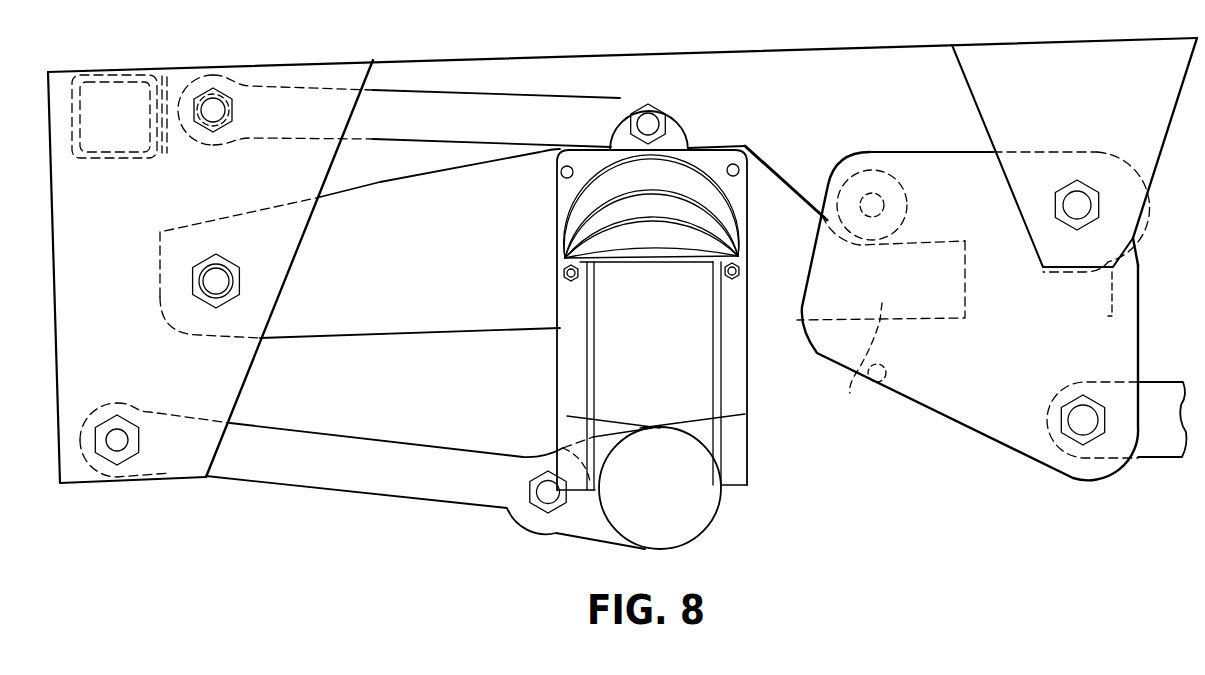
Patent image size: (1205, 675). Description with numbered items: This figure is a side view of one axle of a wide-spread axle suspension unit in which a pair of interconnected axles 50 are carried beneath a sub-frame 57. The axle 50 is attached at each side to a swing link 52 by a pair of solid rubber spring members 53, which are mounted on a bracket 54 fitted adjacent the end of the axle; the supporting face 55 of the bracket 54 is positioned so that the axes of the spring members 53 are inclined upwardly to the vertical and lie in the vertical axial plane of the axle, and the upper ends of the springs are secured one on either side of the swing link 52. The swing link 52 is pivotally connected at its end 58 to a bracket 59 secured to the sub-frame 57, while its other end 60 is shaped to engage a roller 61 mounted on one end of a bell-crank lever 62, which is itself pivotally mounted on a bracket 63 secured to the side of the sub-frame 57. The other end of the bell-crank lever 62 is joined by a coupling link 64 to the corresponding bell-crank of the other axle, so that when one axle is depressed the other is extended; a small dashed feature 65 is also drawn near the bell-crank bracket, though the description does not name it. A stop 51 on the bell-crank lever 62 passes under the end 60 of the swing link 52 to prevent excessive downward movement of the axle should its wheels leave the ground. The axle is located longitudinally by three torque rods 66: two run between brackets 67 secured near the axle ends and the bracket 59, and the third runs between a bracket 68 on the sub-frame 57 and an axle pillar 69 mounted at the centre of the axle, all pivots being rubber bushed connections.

The axle 50 is at (707, 508).
The stop 51 is at (880, 382).
The swing link 52 is at (487, 313).
The solid rubber spring member 53 is at (722, 216).
The bracket 54 is at (652, 320).
The supporting face 55 is at (596, 252).
The sub-frame 57 is at (122, 70).
The end of swing link 58 is at (220, 287).
The bracket 59 is at (230, 381).
The other end of swing link 60 is at (867, 360).
The roller 61 is at (878, 180).
The bell-crank lever 62 is at (957, 165).
The bracket 63 is at (1140, 153).
The coupling link 64 is at (1160, 440).
The tab 65 is at (1118, 300).
The torque rod 66 is at (538, 107).
The bracket 67 is at (595, 528).
The bracket 68 is at (181, 72).
The axle pillar 69 is at (682, 122).